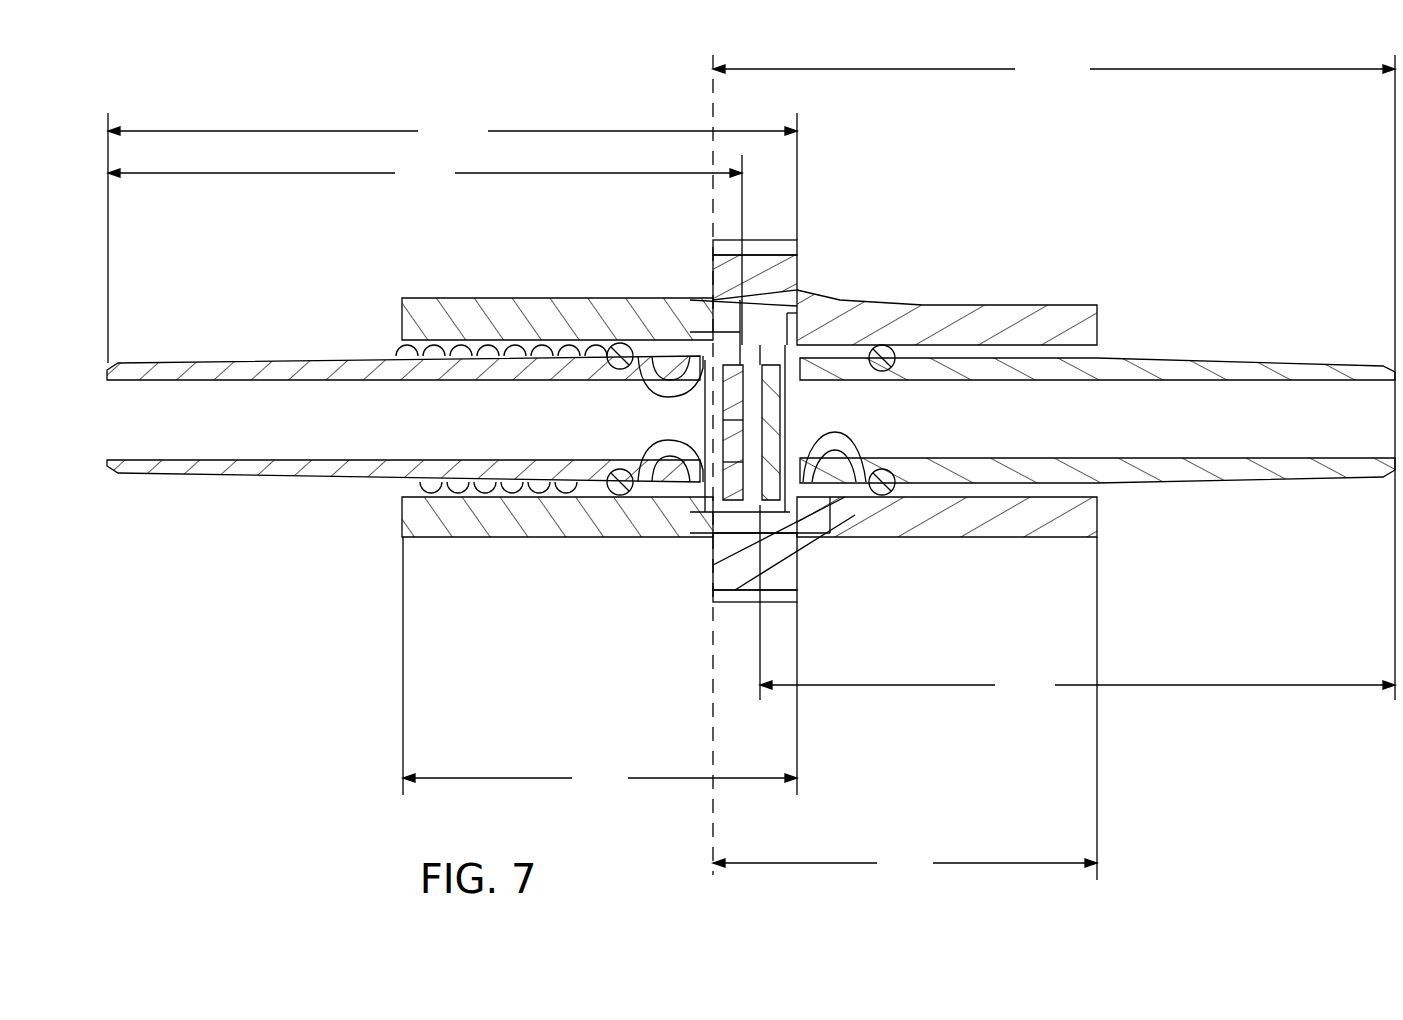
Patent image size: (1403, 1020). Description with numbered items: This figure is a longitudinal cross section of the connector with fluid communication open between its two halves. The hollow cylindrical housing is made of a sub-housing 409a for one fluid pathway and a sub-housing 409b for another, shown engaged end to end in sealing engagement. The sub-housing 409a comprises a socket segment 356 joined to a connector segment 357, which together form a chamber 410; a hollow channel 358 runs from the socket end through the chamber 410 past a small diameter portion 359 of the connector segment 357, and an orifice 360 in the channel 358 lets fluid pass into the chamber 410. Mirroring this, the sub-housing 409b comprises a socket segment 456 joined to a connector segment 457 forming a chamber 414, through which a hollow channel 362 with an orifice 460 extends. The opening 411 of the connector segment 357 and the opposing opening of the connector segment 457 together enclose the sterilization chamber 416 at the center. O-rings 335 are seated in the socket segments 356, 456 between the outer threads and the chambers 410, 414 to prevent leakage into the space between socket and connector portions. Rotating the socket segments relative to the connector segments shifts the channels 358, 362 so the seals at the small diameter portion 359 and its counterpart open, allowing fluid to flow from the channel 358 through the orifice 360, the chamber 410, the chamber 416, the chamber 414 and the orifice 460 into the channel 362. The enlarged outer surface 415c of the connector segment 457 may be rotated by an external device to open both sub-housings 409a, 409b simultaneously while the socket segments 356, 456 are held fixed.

The hollow channel 358 is at (300, 482).
The hollow channel 362 is at (1192, 478).
The chamber 410 is at (660, 492).
The small diameter portion 359 is at (676, 492).
The orifice 360 is at (665, 372).
The O-rings 335 is at (885, 345).
The opening 411 is at (752, 348).
The enclosed chamber 416 is at (745, 490).
The chamber 414 is at (830, 480).
The outer surface 415c is at (797, 593).
The orifice 460 is at (840, 475).
The sub-housing 409a is at (452, 238).
The sub-housing 409b is at (1054, 465).
The socket segment 356 is at (425, 250).
The socket segment 456 is at (1077, 602).
The connector segment 357 is at (600, 666).
The connector segment 457 is at (905, 708).